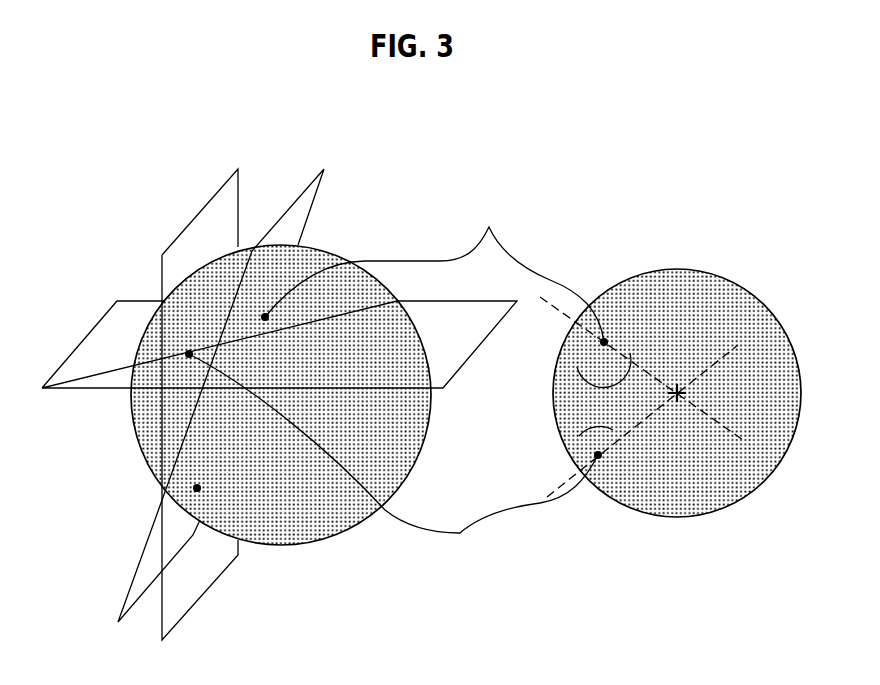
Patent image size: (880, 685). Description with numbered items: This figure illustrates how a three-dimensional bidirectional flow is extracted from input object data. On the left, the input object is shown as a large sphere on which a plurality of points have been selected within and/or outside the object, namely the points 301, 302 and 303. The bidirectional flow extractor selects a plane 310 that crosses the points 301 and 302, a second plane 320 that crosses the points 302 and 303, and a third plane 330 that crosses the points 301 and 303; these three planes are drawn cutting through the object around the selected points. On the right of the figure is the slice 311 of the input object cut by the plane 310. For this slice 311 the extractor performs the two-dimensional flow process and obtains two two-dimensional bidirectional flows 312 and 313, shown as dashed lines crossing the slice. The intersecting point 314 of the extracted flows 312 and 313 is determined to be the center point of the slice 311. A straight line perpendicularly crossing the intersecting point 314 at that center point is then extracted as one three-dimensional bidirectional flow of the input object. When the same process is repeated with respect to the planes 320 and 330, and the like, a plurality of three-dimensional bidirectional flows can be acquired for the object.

The point 301 is at (434, 272).
The point 302 is at (393, 458).
The point 303 is at (197, 488).
The plane 310 is at (90, 332).
The slice 311 is at (677, 268).
The 2D bidirectional flow 312 is at (577, 367).
The 2D bidirectional flow 313 is at (579, 436).
The intersecting point 314 is at (677, 393).
The plane 320 is at (200, 212).
The plane 330 is at (300, 205).